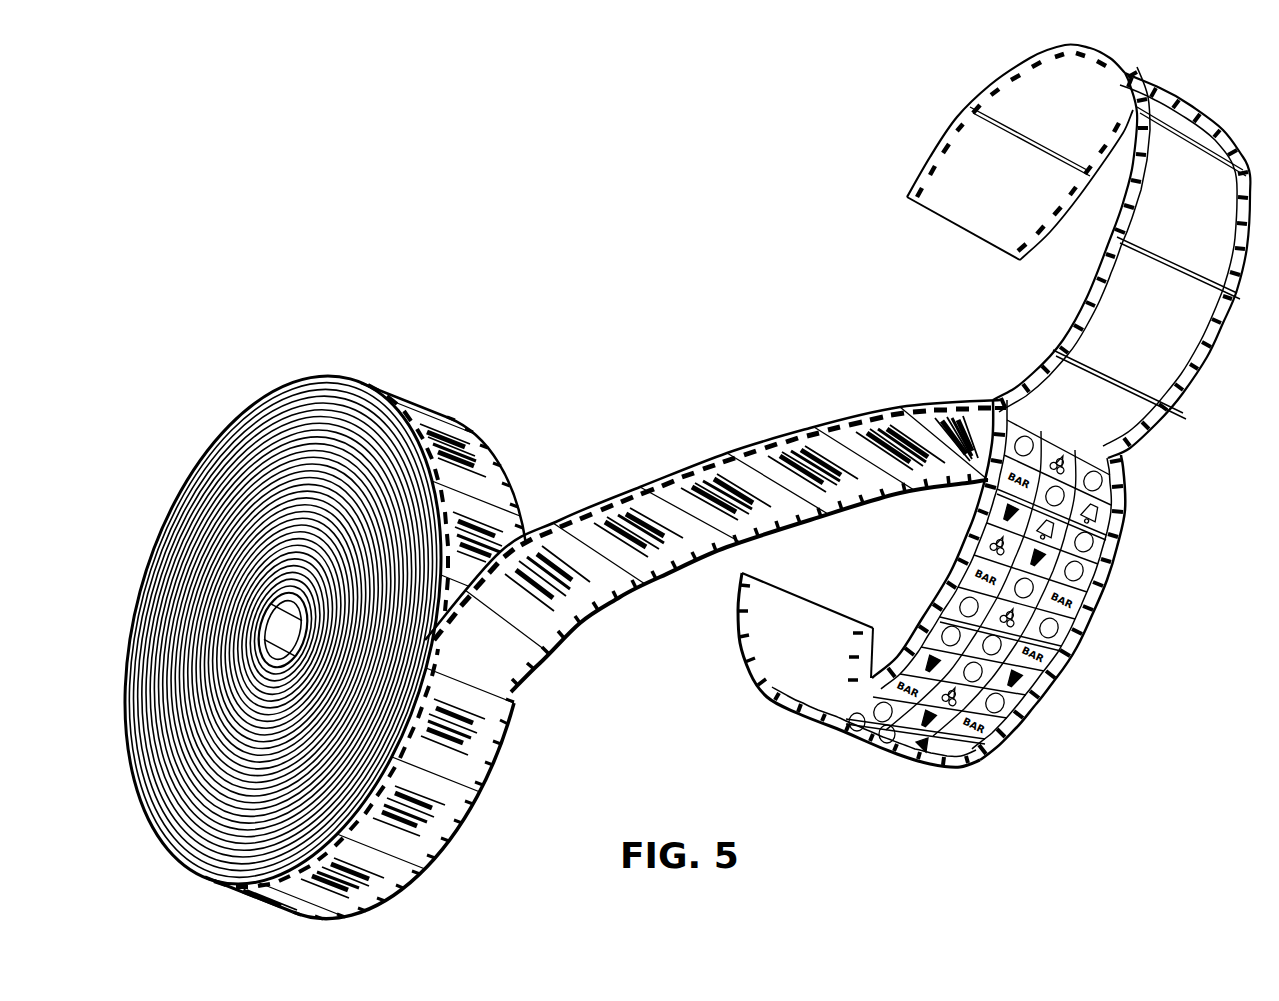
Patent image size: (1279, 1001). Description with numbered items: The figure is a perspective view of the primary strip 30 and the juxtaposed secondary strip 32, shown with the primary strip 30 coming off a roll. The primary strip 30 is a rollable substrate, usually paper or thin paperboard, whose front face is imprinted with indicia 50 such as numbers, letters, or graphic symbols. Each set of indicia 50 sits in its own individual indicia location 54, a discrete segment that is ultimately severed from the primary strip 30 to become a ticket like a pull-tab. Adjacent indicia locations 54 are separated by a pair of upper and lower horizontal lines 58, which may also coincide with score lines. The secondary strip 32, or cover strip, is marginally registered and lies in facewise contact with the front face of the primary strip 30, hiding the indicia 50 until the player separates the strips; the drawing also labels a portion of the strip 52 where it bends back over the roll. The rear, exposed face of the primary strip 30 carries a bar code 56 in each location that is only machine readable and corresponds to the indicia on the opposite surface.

The primary strip 30 is at (773, 611).
The secondary strip 32 is at (947, 203).
The indicia 50 is at (943, 633).
The symbol strip 52 is at (1087, 347).
The indicia location 54 is at (977, 583).
The bar code 56 is at (1175, 394).
The upper and lower horizontal lines 58 is at (1113, 538).